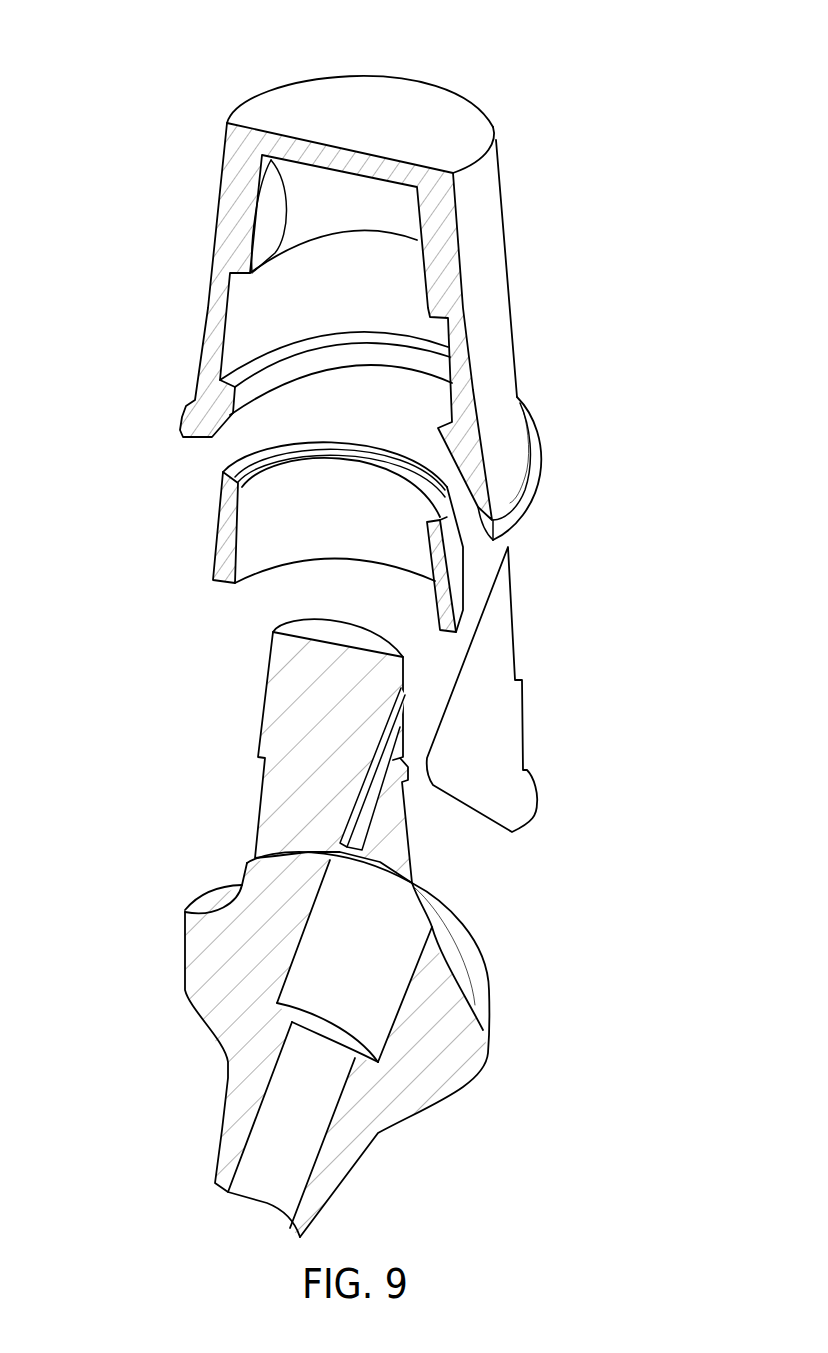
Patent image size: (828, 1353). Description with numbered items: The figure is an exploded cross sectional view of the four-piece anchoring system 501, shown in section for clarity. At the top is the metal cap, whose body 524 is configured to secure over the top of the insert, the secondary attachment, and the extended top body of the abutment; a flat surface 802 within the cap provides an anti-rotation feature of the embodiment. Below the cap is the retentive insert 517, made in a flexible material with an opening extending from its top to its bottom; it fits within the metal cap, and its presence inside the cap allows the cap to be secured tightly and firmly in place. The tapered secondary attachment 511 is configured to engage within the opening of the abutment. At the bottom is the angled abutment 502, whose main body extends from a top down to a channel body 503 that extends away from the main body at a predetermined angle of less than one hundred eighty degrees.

The four-piece anchoring system 501 is at (592, 52).
The body 524 is at (215, 240).
The flat surface 802 is at (290, 209).
The retentive insert 517 is at (217, 537).
The secondary attachment 511 is at (514, 603).
The channel body 503 is at (222, 1107).
The angled abutment 502 is at (168, 987).